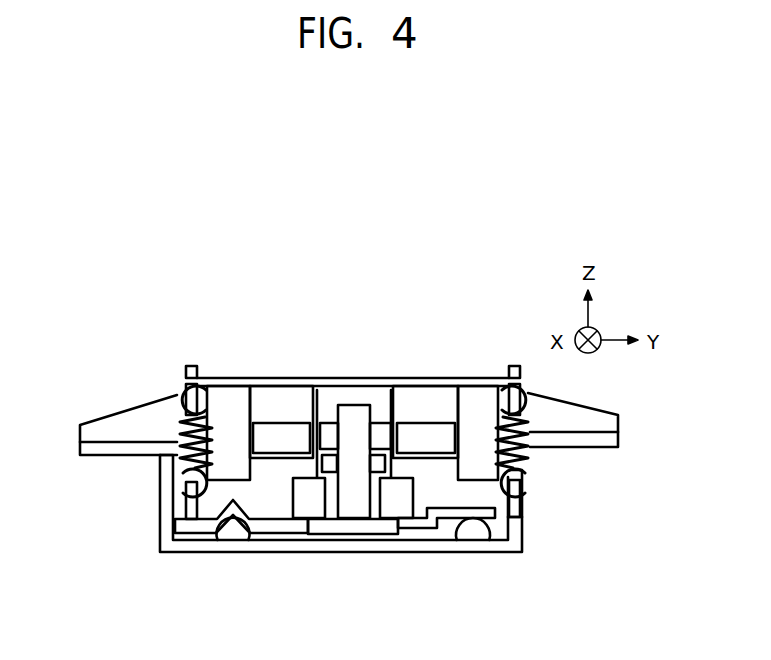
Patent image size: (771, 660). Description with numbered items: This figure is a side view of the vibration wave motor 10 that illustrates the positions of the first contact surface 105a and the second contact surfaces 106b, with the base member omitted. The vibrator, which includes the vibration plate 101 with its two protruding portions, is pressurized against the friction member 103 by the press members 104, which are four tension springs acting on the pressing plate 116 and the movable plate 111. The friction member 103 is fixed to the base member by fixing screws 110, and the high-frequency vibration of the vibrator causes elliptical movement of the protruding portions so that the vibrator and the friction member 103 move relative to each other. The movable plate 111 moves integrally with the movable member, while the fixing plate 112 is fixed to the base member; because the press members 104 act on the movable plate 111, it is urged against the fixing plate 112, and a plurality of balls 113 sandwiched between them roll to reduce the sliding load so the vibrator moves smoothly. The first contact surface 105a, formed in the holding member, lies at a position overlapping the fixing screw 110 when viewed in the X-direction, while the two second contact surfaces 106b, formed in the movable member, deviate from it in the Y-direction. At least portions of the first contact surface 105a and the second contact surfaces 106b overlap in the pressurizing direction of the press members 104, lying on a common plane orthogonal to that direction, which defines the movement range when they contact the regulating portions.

The vibration wave motor 10 is at (139, 338).
The vibration plate 101 is at (316, 478).
The friction member 103 is at (407, 507).
The press members 104 is at (163, 455).
The first contact surface 105a is at (330, 433).
The second contact surfaces 106b is at (283, 433).
The fixing screw 110 is at (352, 427).
The movable plate 111 is at (180, 545).
The fixing plate 112 is at (283, 530).
The balls 113 is at (233, 533).
The pressing plate 116 is at (513, 366).